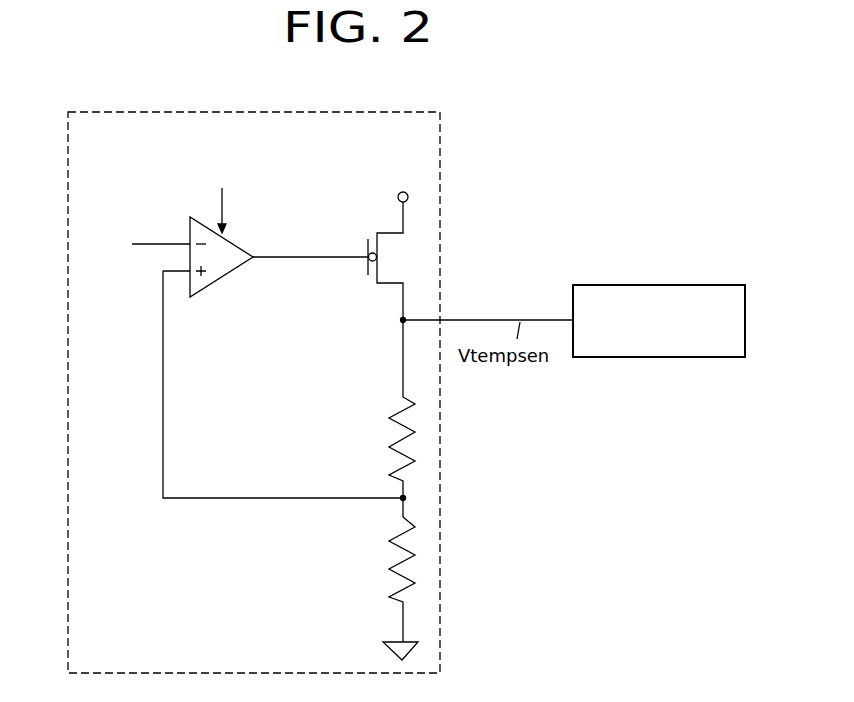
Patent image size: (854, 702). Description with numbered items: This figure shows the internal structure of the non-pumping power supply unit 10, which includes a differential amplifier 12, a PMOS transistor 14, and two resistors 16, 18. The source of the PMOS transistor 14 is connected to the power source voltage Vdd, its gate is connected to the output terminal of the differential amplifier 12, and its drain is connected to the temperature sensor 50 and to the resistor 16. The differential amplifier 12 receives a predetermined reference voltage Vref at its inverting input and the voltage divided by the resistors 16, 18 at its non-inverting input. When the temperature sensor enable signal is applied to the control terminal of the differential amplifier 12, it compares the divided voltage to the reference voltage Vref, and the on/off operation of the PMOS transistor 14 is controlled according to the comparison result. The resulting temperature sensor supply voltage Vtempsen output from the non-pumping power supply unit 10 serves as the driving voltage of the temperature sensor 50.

The non-pumping power supply unit 10 is at (440, 133).
The differential amplifier 12 is at (240, 243).
The PMOS transistor 14 is at (363, 278).
The resistor 16 is at (393, 430).
The resistor 18 is at (393, 558).
The temperature sensor 50 is at (688, 285).